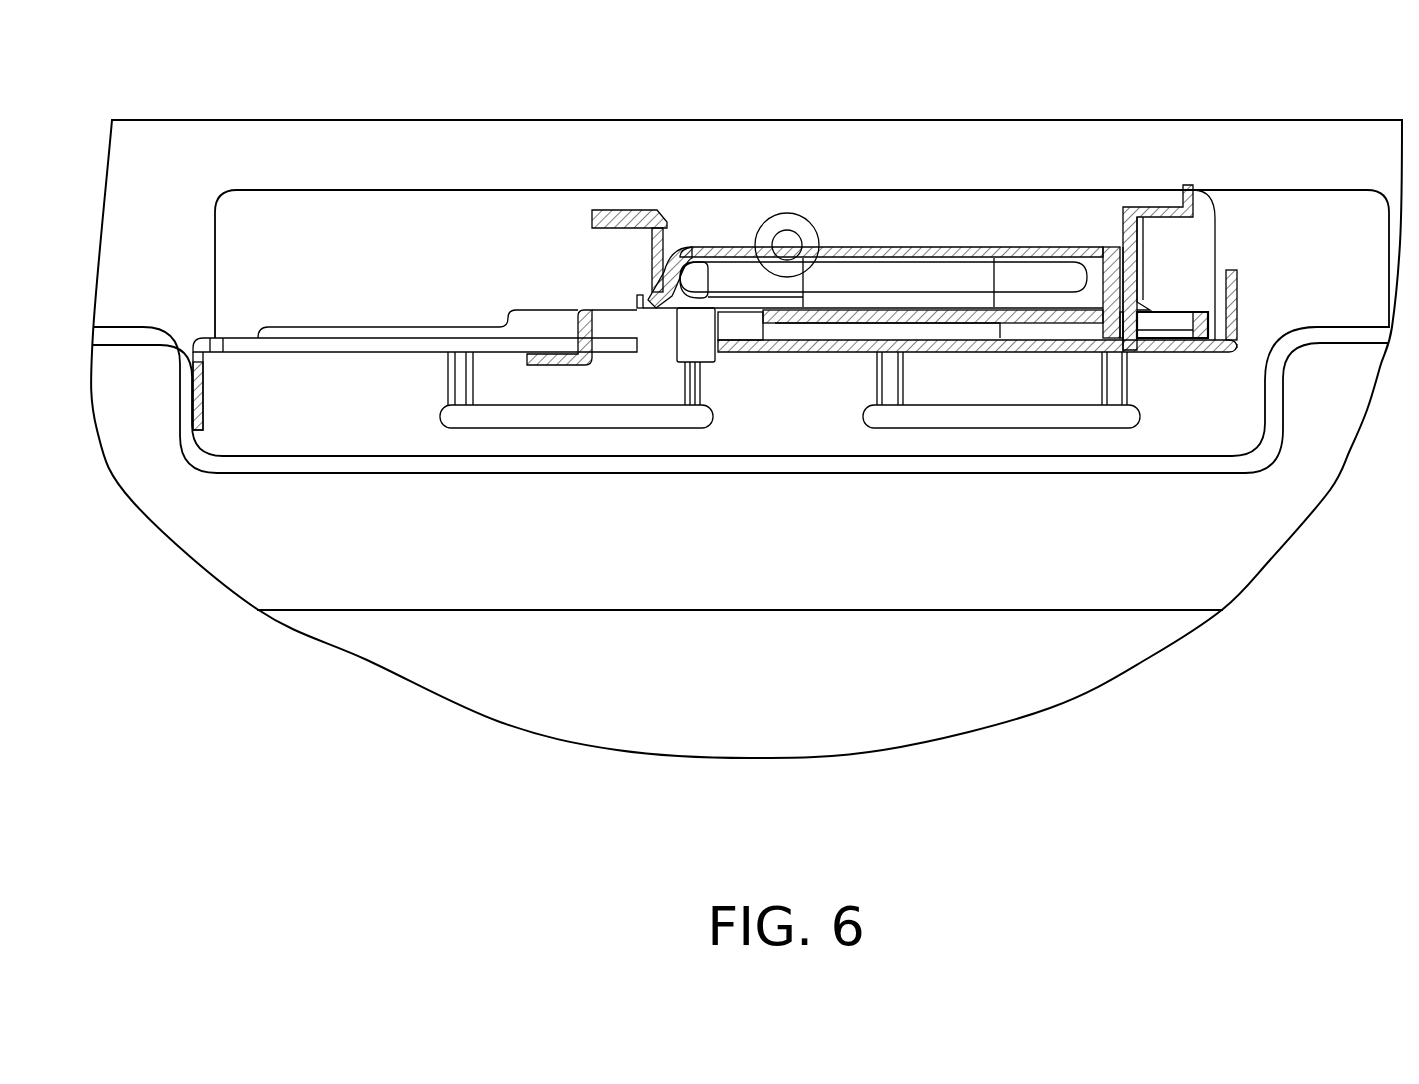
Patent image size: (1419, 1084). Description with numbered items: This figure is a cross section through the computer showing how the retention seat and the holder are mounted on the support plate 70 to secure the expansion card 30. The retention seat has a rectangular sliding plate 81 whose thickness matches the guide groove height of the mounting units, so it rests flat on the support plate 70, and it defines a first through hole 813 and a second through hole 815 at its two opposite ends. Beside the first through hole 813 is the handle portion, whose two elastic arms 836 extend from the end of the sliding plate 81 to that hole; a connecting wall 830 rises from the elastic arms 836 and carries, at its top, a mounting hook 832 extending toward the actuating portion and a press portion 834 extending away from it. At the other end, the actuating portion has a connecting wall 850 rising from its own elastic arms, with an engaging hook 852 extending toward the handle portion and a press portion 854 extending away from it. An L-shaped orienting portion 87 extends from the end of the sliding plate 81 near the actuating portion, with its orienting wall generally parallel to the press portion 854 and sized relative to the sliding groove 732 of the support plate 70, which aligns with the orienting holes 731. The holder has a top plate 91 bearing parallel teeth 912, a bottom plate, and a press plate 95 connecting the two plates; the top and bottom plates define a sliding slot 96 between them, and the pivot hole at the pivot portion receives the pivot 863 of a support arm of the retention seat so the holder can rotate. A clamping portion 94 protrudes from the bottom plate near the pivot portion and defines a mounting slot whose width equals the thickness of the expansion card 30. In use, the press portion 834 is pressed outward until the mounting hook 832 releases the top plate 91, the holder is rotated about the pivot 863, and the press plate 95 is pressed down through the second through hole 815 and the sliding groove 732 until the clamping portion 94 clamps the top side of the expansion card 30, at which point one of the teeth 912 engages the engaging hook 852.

The expansion card 30 is at (610, 668).
The support plate 70 is at (1041, 330).
The sliding plate 81 is at (980, 318).
The orienting portion 87 is at (622, 343).
The top plate 91 is at (878, 309).
The clamping portion 94 is at (672, 320).
The press plate 95 is at (1090, 318).
The sliding slot 96 is at (780, 283).
The orienting holes 731 is at (1247, 311).
The sliding groove 732 is at (653, 312).
The first through hole 813 is at (1125, 352).
The second through hole 815 is at (733, 328).
The connecting wall 830 is at (1135, 252).
The mounting hook 832 is at (1118, 240).
The press portion 834 is at (1157, 207).
The elastic arms 836 is at (1160, 310).
The connecting wall 850 is at (584, 183).
The engaging hook 852 is at (664, 242).
The press portion 854 is at (625, 214).
The pivot 863 is at (710, 285).
The teeth 912 is at (1037, 247).